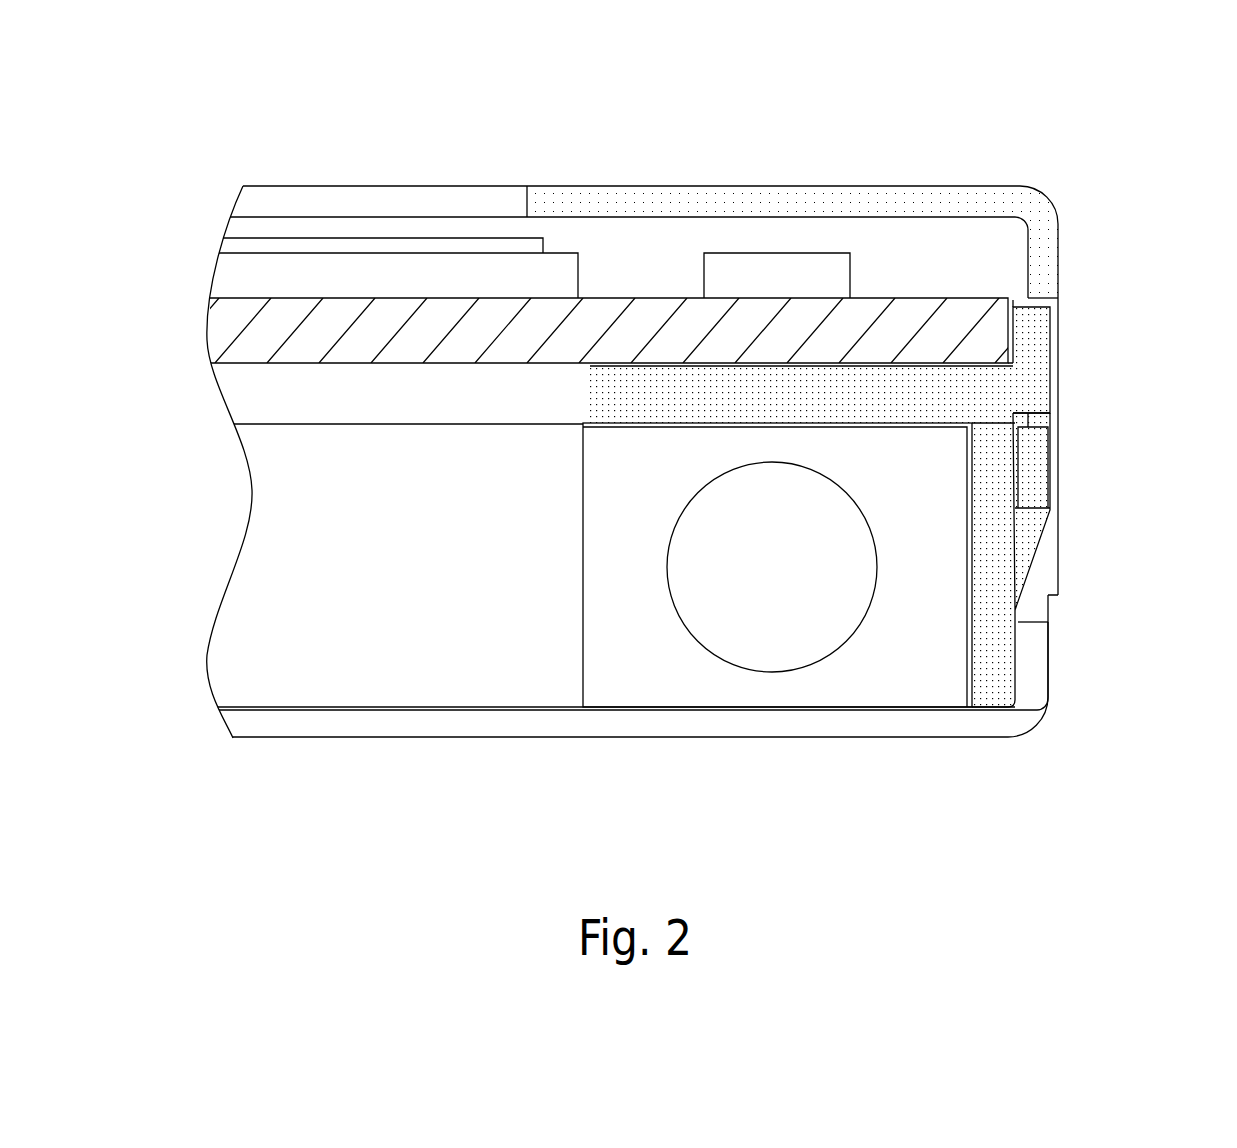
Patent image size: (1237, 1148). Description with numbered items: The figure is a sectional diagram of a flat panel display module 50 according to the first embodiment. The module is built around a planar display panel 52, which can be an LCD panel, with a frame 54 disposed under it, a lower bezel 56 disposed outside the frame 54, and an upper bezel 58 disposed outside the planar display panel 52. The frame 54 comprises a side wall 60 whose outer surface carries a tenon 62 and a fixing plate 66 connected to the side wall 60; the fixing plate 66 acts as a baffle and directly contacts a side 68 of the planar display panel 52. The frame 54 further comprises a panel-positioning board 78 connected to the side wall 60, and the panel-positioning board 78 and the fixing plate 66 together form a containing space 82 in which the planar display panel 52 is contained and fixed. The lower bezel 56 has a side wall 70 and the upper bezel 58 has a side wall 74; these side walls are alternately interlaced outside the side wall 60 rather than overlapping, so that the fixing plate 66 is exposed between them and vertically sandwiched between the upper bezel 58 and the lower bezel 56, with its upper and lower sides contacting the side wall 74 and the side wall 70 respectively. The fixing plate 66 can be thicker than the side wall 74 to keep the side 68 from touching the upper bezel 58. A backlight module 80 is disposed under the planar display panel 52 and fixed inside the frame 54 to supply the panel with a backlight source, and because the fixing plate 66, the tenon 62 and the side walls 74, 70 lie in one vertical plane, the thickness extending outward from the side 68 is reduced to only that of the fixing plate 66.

The flat panel display module 50 is at (1097, 173).
The planar display panel 52 is at (460, 313).
The frame 54 is at (1138, 335).
The lower bezel 56 is at (632, 740).
The upper bezel 58 is at (627, 186).
The side wall 60 is at (987, 468).
The tenon 62 is at (1025, 541).
The fixing plate 66 is at (1025, 348).
The side 68 is at (1023, 283).
The side wall 70 is at (1050, 658).
The side wall 74 is at (1038, 251).
The panel-positioning board 78 is at (765, 398).
The backlight module 80 is at (697, 668).
The containing space 82 is at (908, 254).